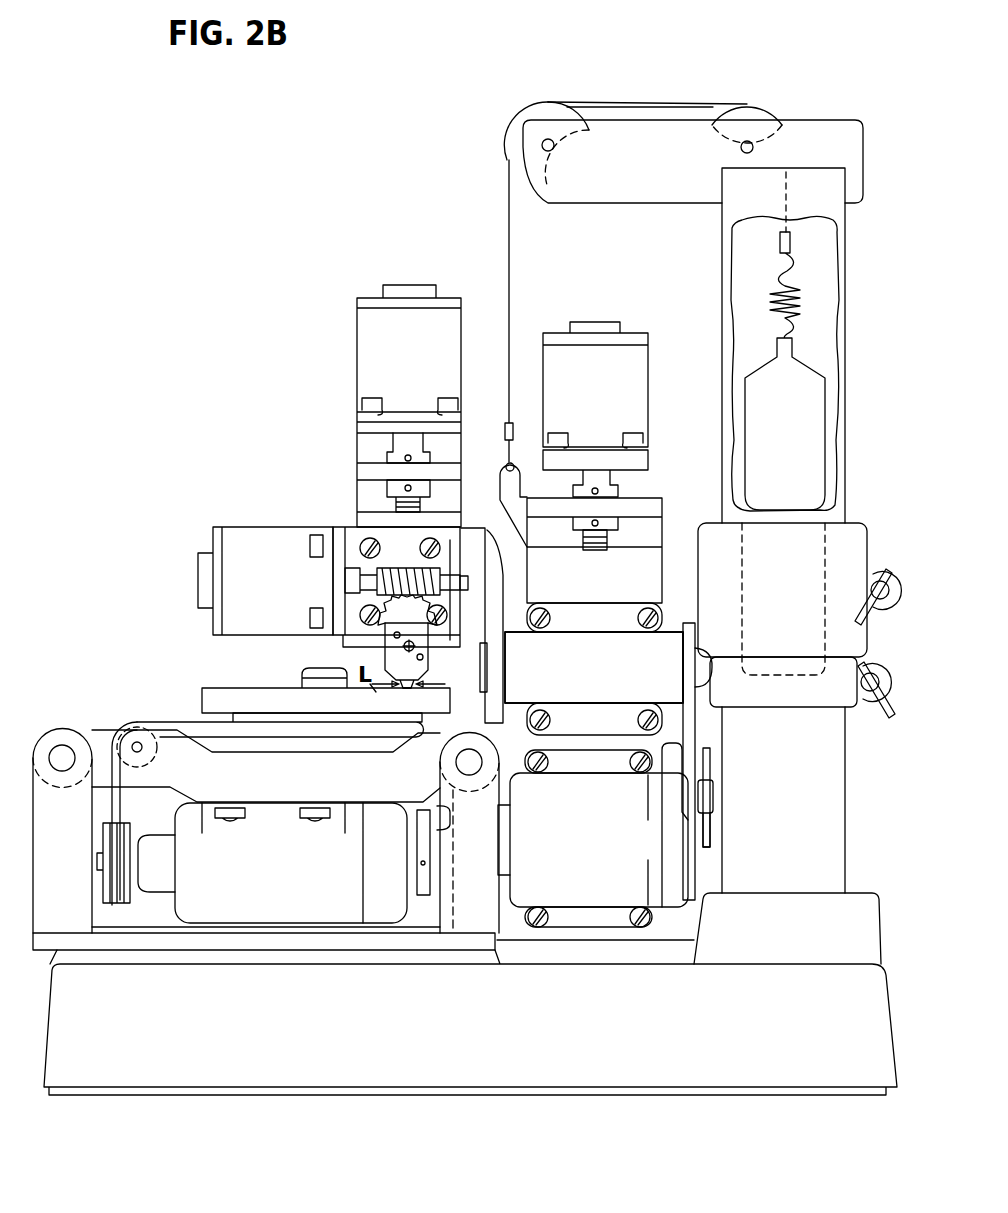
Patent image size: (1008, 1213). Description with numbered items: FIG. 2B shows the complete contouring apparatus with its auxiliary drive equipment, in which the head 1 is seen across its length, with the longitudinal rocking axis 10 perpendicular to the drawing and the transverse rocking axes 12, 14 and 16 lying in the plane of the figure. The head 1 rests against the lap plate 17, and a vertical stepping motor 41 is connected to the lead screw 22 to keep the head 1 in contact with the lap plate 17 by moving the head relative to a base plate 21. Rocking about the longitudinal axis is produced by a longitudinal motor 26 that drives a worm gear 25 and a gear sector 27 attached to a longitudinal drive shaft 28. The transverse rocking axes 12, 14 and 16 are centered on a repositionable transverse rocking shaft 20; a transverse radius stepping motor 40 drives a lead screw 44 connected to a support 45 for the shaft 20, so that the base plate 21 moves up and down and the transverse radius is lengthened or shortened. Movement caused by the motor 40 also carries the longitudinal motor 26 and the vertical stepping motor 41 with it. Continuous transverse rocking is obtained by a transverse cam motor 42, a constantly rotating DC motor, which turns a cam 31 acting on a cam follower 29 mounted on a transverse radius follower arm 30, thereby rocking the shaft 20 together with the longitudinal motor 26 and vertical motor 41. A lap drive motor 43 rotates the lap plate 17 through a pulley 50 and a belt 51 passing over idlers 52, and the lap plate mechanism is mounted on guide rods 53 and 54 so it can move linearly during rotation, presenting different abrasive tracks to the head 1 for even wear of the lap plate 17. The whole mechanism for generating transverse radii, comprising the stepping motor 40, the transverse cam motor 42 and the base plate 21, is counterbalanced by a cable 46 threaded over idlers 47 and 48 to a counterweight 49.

The head 1 is at (408, 687).
The longitudinal rocking axis 10 is at (405, 645).
The transverse rocking axis 12 is at (525, 668).
The transverse rocking axis 14 is at (525, 668).
The transverse rocking axis 16 is at (525, 668).
The lap plate 17 is at (262, 688).
The transverse rocking shaft 20 is at (487, 682).
The base plate 21 is at (365, 449).
The lead screw 22 is at (398, 505).
The worm gear 25 is at (366, 578).
The longitudinal motor 26 is at (212, 546).
The gear sector 27 is at (387, 608).
The longitudinal drive shaft 28 is at (600, 665).
The cam follower 29 is at (712, 795).
The transverse radius follower arm 30 is at (696, 733).
The cam 31 is at (710, 833).
The transverse radius stepping motor 40 is at (640, 336).
The vertical stepping motor 41 is at (362, 340).
The transverse cam motor 42 is at (570, 854).
The lap drive motor 43 is at (266, 887).
The lead screw 44 is at (608, 540).
The support 45 is at (586, 586).
The cable 46 is at (508, 226).
The idler 47 is at (550, 103).
The idler 48 is at (760, 112).
The counterweight 49 is at (770, 427).
The pulley 50 is at (100, 863).
The belt 51 is at (121, 806).
The idler 52 is at (158, 757).
The guide rod 53 is at (64, 752).
The guide rod 54 is at (457, 765).